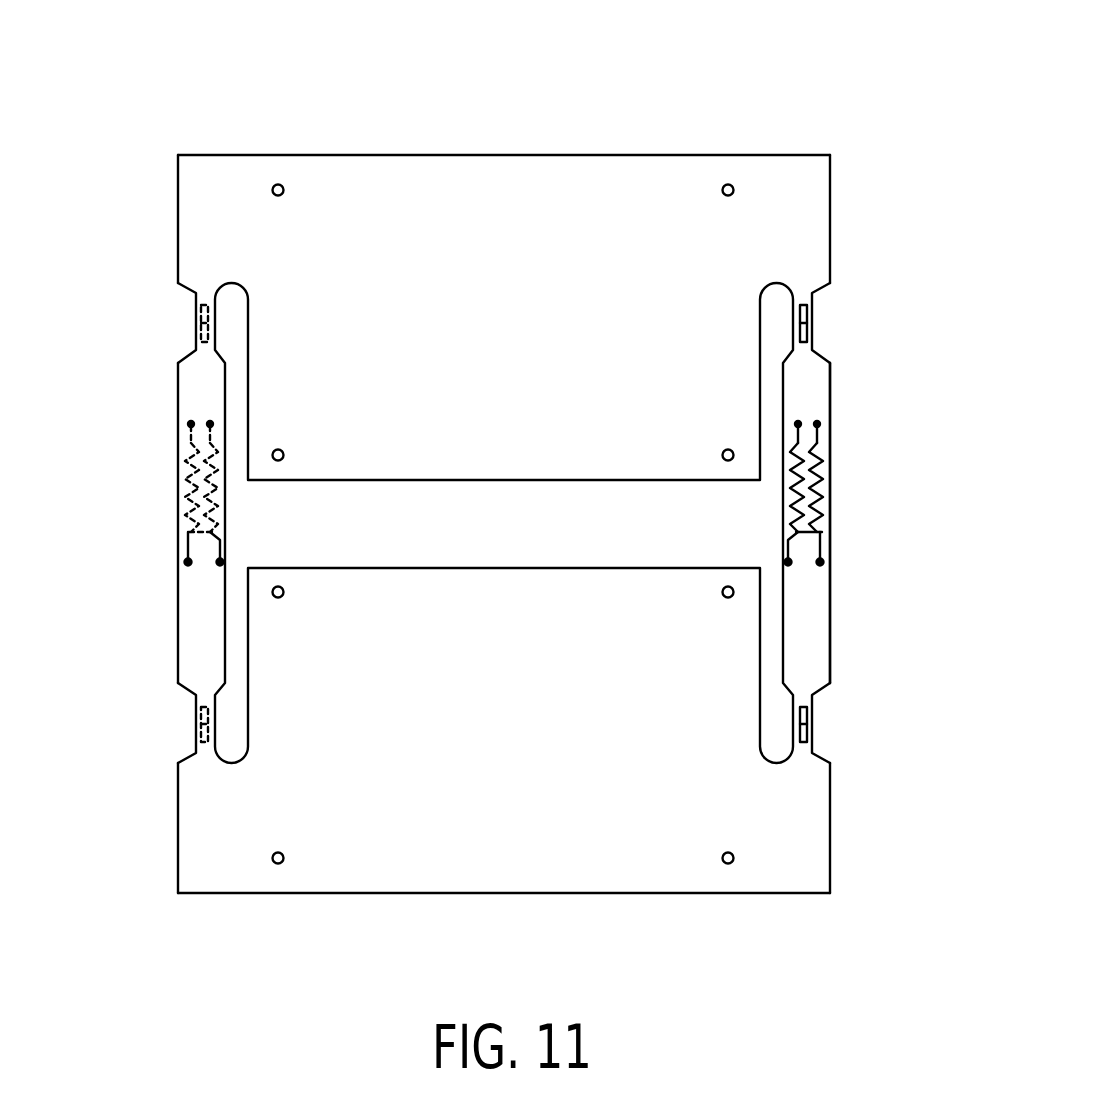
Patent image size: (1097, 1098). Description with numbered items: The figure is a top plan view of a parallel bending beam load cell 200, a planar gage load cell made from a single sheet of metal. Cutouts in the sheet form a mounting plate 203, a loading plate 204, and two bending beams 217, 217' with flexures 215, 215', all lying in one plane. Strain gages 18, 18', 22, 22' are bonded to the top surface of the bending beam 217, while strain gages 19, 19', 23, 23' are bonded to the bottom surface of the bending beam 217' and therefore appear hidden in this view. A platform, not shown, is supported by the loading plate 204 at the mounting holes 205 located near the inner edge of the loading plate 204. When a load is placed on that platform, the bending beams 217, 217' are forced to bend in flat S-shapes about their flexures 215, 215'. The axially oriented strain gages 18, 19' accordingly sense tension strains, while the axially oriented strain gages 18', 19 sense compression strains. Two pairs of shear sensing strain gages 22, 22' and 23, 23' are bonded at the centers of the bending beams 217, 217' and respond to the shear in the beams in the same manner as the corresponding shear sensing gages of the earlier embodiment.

The parallel bending beam load cell 200 is at (770, 112).
The mounting plate 203 is at (440, 178).
The loading plate 204 is at (460, 873).
The mounting holes 205 is at (280, 598).
The flexure 215 is at (504, 323).
The flexure 215' is at (502, 723).
The bending beam 217 is at (850, 523).
The bending beam 217' is at (155, 523).
The strain gage 18 is at (841, 334).
The strain gage 18' is at (839, 714).
The strain gage 19 is at (168, 334).
The strain gage 19' is at (166, 713).
The shear sensing strain gage 22 is at (842, 476).
The shear sensing strain gage 22' is at (838, 551).
The shear sensing strain gage 23 is at (165, 476).
The shear sensing strain gage 23' is at (171, 549).